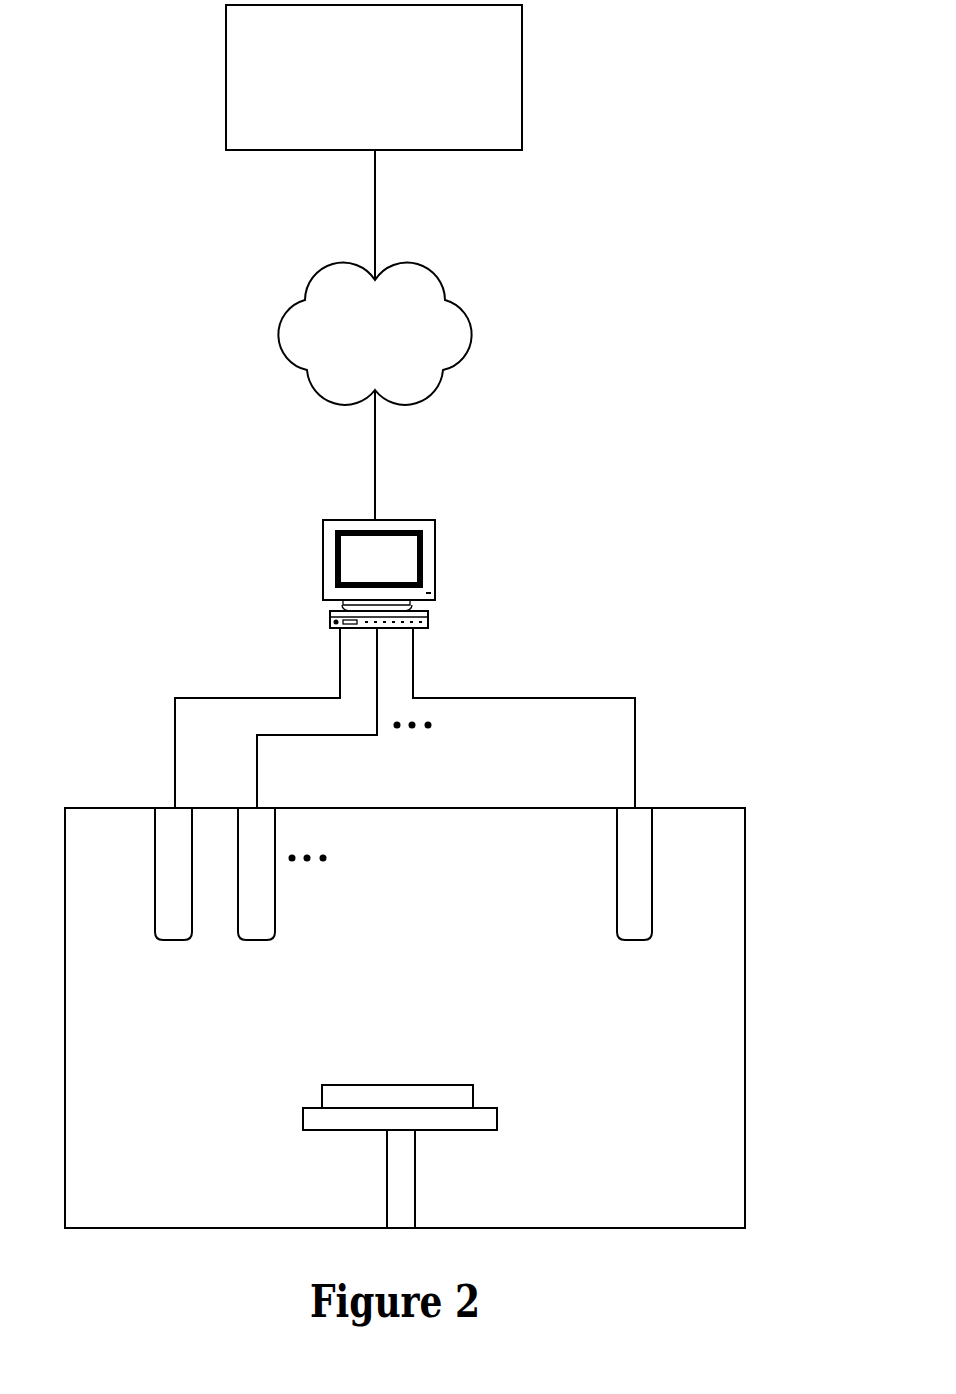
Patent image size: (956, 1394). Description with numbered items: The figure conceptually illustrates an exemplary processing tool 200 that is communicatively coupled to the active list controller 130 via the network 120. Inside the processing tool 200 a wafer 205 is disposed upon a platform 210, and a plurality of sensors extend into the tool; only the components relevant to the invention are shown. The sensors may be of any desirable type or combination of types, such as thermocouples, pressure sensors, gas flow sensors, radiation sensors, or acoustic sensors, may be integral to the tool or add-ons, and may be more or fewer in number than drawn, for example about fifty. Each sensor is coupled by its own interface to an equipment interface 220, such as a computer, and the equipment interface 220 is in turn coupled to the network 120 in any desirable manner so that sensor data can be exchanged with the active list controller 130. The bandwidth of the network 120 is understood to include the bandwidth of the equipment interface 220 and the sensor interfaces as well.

The active list controller 130 is at (350, 132).
The network 120 is at (352, 368).
The equipment interface 220 is at (434, 572).
The processing tool 200 is at (746, 1143).
The wafer 205 is at (387, 1084).
The platform 210 is at (416, 1203).